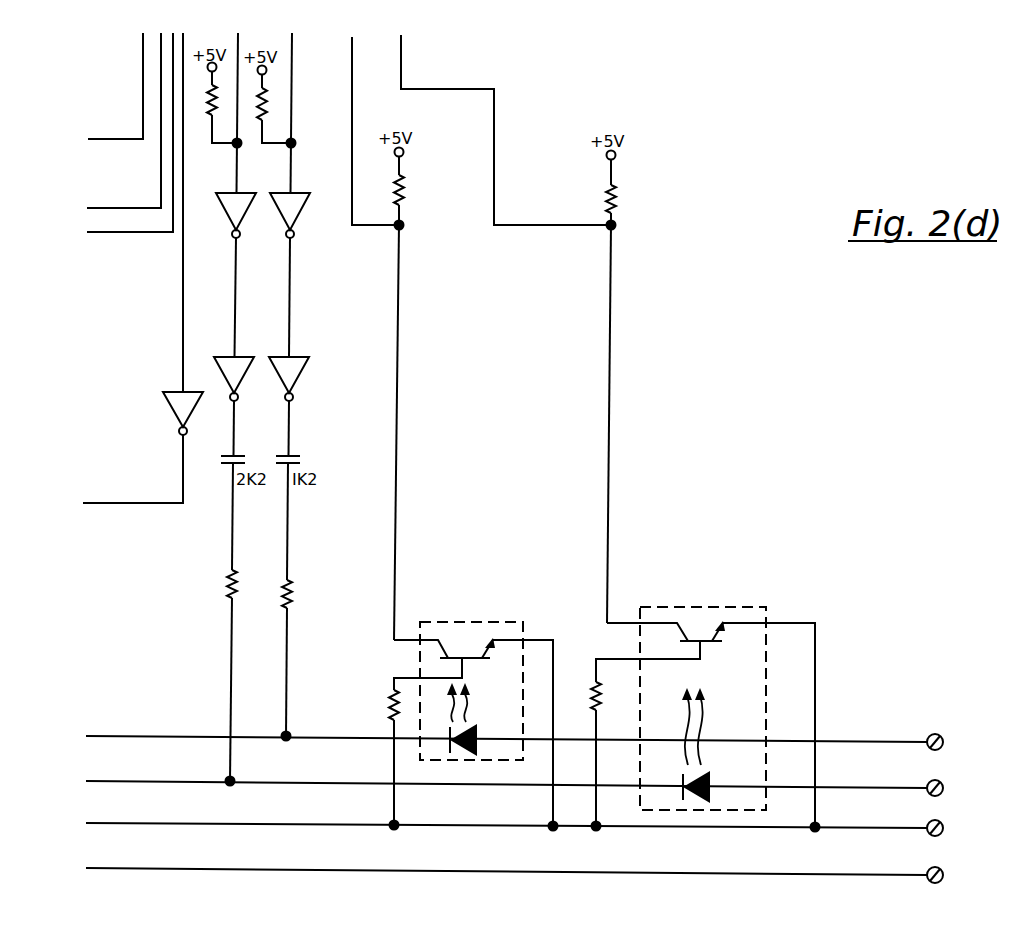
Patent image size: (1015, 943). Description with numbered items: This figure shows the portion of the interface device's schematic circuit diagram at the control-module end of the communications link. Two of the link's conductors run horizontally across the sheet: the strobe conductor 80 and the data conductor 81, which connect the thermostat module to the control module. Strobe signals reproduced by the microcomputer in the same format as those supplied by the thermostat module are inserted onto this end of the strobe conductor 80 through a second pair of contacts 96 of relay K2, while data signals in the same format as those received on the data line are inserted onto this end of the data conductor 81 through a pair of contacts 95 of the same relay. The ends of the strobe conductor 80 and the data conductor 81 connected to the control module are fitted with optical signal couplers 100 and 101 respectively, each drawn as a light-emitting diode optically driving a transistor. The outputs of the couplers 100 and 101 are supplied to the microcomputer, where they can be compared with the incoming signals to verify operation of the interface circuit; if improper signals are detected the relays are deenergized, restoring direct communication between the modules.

The strobe conductor 80 is at (329, 736).
The data conductor 81 is at (311, 782).
The pair of contacts of relay K2 95 is at (222, 463).
The second pair of contacts of relay K2 96 is at (301, 456).
The optical signal coupler 100 is at (480, 622).
The optical signal coupler 101 is at (710, 608).